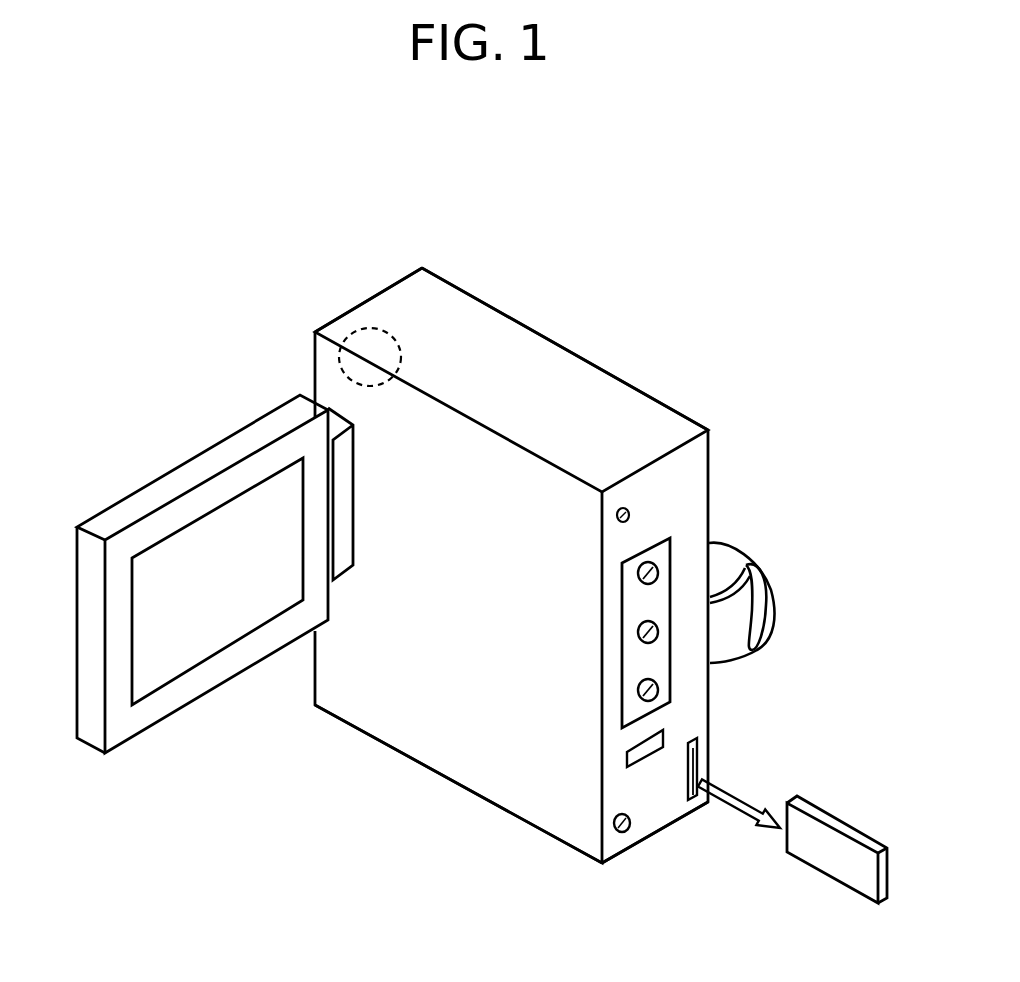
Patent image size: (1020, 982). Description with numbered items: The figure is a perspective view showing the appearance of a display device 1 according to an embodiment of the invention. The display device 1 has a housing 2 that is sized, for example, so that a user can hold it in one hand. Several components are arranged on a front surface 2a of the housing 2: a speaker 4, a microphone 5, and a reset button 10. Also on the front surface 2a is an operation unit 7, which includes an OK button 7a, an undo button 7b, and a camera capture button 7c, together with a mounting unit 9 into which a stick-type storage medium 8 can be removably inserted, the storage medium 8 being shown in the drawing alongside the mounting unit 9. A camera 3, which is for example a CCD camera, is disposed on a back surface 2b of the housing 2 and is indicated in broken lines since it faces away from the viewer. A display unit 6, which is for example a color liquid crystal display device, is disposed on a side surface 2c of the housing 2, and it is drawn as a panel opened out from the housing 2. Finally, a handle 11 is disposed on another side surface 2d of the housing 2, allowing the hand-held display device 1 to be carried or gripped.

The display device 1 is at (594, 226).
The housing 2 is at (602, 387).
The front surface 2a is at (675, 822).
The back surface 2b is at (395, 285).
The side surface 2c is at (432, 745).
The side surface 2d is at (540, 330).
The camera 3 is at (365, 330).
The speaker 4 is at (628, 507).
The microphone 5 is at (623, 833).
The display unit 6 is at (230, 618).
The operation unit 7 is at (663, 663).
The OK button 7a is at (638, 578).
The undo button 7b is at (638, 638).
The camera capture button 7c is at (638, 696).
The stick-type storage medium 8 is at (833, 868).
The mounting unit 9 is at (700, 757).
The reset button 10 is at (627, 757).
The handle 11 is at (727, 562).